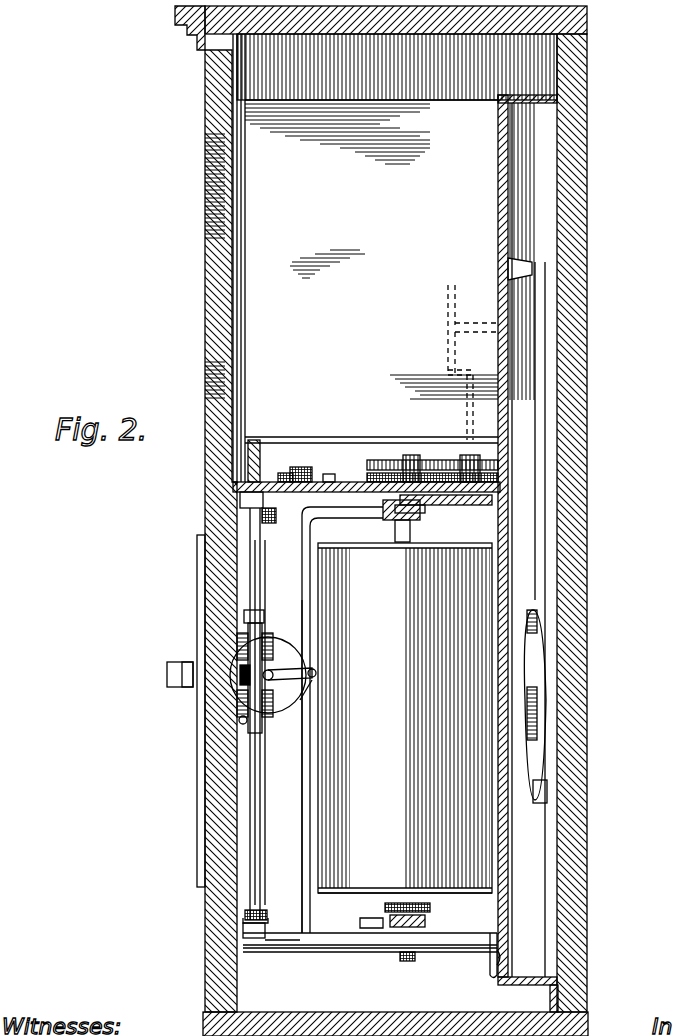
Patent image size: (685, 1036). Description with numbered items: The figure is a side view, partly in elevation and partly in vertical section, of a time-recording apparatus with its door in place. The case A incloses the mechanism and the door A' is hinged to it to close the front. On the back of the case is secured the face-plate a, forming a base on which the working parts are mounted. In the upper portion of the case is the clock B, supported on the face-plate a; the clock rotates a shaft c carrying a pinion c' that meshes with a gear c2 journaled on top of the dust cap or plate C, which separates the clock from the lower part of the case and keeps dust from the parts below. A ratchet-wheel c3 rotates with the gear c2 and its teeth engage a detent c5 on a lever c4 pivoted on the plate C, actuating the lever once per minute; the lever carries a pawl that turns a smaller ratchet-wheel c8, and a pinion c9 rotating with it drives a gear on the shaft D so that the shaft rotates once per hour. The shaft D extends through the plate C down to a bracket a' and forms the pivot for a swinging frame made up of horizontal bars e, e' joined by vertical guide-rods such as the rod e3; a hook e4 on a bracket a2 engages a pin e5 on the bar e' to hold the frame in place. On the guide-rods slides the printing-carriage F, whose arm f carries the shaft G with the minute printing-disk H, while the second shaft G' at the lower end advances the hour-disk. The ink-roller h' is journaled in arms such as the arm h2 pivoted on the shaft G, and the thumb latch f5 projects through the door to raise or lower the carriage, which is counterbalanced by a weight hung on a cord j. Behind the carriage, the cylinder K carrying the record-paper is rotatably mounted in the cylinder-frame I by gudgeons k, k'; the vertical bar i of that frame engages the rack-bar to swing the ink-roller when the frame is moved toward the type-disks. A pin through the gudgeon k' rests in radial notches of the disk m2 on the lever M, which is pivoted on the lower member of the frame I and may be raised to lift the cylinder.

The case A is at (411, 521).
The door A' is at (191, 531).
The clock B is at (365, 258).
The dust cap or plate C is at (485, 488).
The shaft c is at (506, 446).
The pinion c' is at (510, 462).
The gear c2 is at (437, 473).
The ratchet-wheel c3 is at (440, 458).
The lever c4 is at (373, 476).
The detent c5 is at (410, 458).
The smaller ratchet-wheel c8 is at (305, 470).
The pinion c9 is at (283, 472).
The cord j is at (257, 444).
The face-plate a is at (445, 742).
The bracket a' is at (370, 973).
The bracket a2 is at (300, 946).
The vertically-extending bar i is at (302, 773).
The cylinder K is at (405, 718).
The gudgeon k is at (388, 522).
The gudgeon k' is at (404, 887).
The cylinder-frame I is at (425, 923).
The lever M is at (395, 927).
The disk m2 is at (405, 908).
The horizontal bar e is at (221, 505).
The shaft D is at (257, 568).
The guide-rod e3 is at (255, 858).
The hook e4 is at (247, 912).
The pin e5 is at (245, 920).
The horizontal bar e' is at (218, 938).
The arm f is at (248, 637).
The thumb spring or latch f5 is at (167, 675).
The shaft G is at (268, 656).
The second shaft G' is at (196, 736).
The printing-carriage F is at (240, 700).
The printing-disk H is at (290, 690).
The ink-roller h' is at (338, 676).
The arm h2 is at (300, 702).